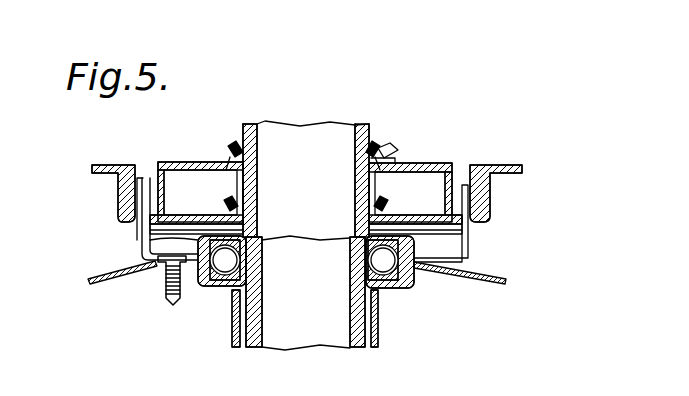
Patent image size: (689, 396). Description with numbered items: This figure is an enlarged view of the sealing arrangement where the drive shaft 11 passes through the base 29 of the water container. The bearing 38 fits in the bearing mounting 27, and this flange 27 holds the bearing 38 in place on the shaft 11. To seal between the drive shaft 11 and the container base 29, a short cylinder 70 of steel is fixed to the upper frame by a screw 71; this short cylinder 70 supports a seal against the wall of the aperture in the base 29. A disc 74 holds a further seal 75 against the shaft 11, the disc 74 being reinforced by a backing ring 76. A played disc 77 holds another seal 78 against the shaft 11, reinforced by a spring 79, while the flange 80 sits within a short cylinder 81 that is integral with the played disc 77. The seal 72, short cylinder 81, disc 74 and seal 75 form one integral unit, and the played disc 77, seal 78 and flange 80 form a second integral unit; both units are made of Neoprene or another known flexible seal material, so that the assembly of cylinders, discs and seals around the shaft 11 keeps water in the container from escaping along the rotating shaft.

The drive shaft 11 is at (371, 137).
The bearing mounting 27 is at (207, 288).
The base of the water container 29 is at (116, 168).
The bearing 38 is at (412, 283).
The short cylinder 70 is at (140, 240).
The screw 71 is at (164, 293).
The seal 72 is at (126, 197).
The disc 74 is at (188, 170).
The seal 75 is at (233, 148).
The backing ring 76 is at (229, 207).
The played disc 77 is at (420, 170).
The seal 78 is at (386, 147).
The spring 79 is at (392, 152).
The flange 80 is at (174, 178).
The short cylinder 81 is at (152, 178).